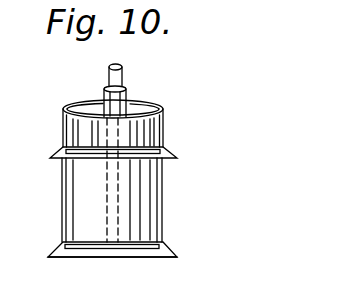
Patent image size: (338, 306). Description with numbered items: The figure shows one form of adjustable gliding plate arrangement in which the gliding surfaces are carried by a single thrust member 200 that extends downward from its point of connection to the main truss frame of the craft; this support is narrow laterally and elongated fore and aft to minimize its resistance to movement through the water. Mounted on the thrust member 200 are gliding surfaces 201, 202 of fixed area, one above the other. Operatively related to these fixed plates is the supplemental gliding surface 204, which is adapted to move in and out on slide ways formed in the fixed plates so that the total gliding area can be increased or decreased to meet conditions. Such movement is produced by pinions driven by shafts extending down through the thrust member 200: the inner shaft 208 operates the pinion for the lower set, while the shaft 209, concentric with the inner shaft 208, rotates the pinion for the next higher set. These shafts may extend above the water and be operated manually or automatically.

The thrust member 200 is at (152, 127).
The gliding surface 201 is at (56, 257).
The gliding surface 202 is at (60, 147).
The supplemental gliding surface 204 is at (170, 150).
The inner shaft 208 is at (109, 73).
The shaft 209 is at (118, 100).